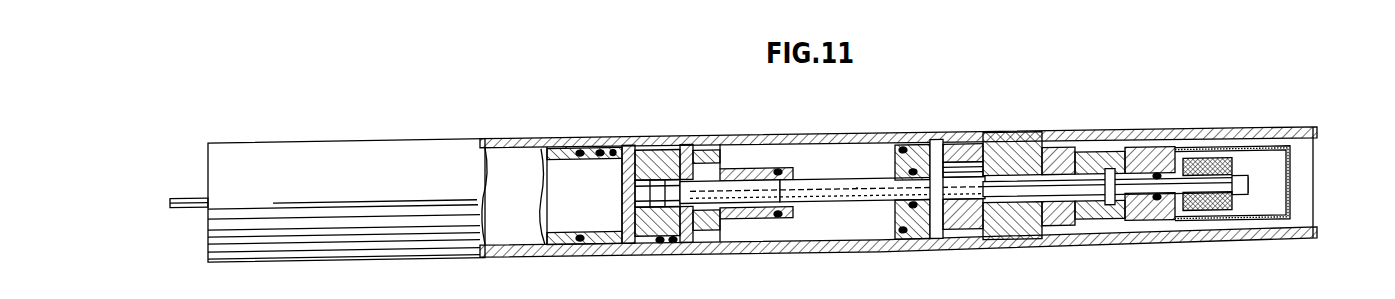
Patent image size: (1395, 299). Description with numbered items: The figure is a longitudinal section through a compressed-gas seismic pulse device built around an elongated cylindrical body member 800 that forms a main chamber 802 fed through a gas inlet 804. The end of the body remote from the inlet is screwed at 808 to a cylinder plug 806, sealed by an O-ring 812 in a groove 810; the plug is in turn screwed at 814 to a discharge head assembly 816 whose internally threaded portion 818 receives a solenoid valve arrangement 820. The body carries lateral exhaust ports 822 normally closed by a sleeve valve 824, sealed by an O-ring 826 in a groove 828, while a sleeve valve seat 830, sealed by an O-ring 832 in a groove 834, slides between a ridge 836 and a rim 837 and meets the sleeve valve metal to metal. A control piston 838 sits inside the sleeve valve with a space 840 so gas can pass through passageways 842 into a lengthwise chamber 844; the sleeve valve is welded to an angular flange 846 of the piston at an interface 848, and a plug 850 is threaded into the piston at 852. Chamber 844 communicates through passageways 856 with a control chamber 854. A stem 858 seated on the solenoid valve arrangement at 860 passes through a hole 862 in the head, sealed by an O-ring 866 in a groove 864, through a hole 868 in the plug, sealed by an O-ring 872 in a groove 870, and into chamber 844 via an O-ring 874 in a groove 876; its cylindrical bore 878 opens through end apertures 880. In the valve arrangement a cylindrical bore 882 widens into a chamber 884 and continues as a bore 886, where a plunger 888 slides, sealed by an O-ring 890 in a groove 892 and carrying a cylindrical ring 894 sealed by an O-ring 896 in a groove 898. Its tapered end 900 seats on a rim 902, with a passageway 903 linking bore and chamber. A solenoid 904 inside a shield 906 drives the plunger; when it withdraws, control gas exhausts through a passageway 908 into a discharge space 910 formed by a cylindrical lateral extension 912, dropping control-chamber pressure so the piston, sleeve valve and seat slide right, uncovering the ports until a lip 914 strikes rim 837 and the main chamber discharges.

The elongated cylindrical body member 800 is at (346, 200).
The main chamber 802 is at (530, 213).
The gas inlet 804 is at (197, 201).
The cylinder plug 806 is at (957, 248).
The screw threaded attachment 808 is at (910, 240).
The groove 810 is at (898, 207).
The O-ring 812 is at (903, 237).
The screw threaded attachment 814 is at (950, 151).
The discharge head assembly 816 is at (1132, 229).
The internally threaded portion 818 is at (1027, 142).
The solenoid valve arrangement 820 is at (1023, 179).
The lateral exhaust ports 822 is at (655, 161).
The sleeve valve 824 is at (670, 143).
The O-ring 826 is at (701, 261).
The groove 828 is at (760, 216).
The sleeve valve seat 830 is at (566, 142).
The O-ring 832 is at (628, 239).
The groove 834 is at (557, 244).
The ridge 836 is at (540, 146).
The rim 837 is at (613, 145).
The control piston 838 is at (800, 140).
The space 840 is at (630, 143).
The passageways 842 is at (625, 179).
The chamber 844 is at (713, 206).
The angular flange 846 is at (755, 153).
The interface 848 is at (680, 146).
The plug 850 is at (622, 196).
The screw threaded attachment 852 is at (660, 239).
The control chamber 854 is at (863, 169).
The passageways 856 is at (756, 183).
The stem 858 is at (857, 186).
The seating interface 860 is at (1030, 225).
The hole 862 is at (977, 228).
The groove 864 is at (1000, 179).
The O-ring 866 is at (983, 178).
The hole 868 is at (897, 199).
The groove 870 is at (918, 173).
The O-ring 872 is at (910, 150).
The O-ring 874 is at (800, 206).
The groove 876 is at (808, 224).
The cylindrical bore 878 is at (1010, 207).
The end apertures 880 is at (820, 220).
The cylindrical bore 882 is at (1075, 233).
The chamber 884 is at (1190, 220).
The bore 886 is at (1143, 154).
The plunger 888 is at (1243, 178).
The O-ring 890 is at (1153, 167).
The groove 892 is at (1178, 164).
The cylindrical ring 894 is at (1118, 150).
The O-ring 896 is at (1140, 204).
The groove 898 is at (1140, 219).
The tapered end 900 is at (1080, 208).
The rim 902 is at (1085, 168).
The passageway 903 is at (1092, 151).
The solenoid 904 is at (1210, 165).
The shield 906 is at (1293, 173).
The passageway 908 is at (1130, 234).
The discharge space 910 is at (1307, 214).
The cylindrical lateral extension 912 is at (1263, 243).
The lip 914 is at (595, 141).